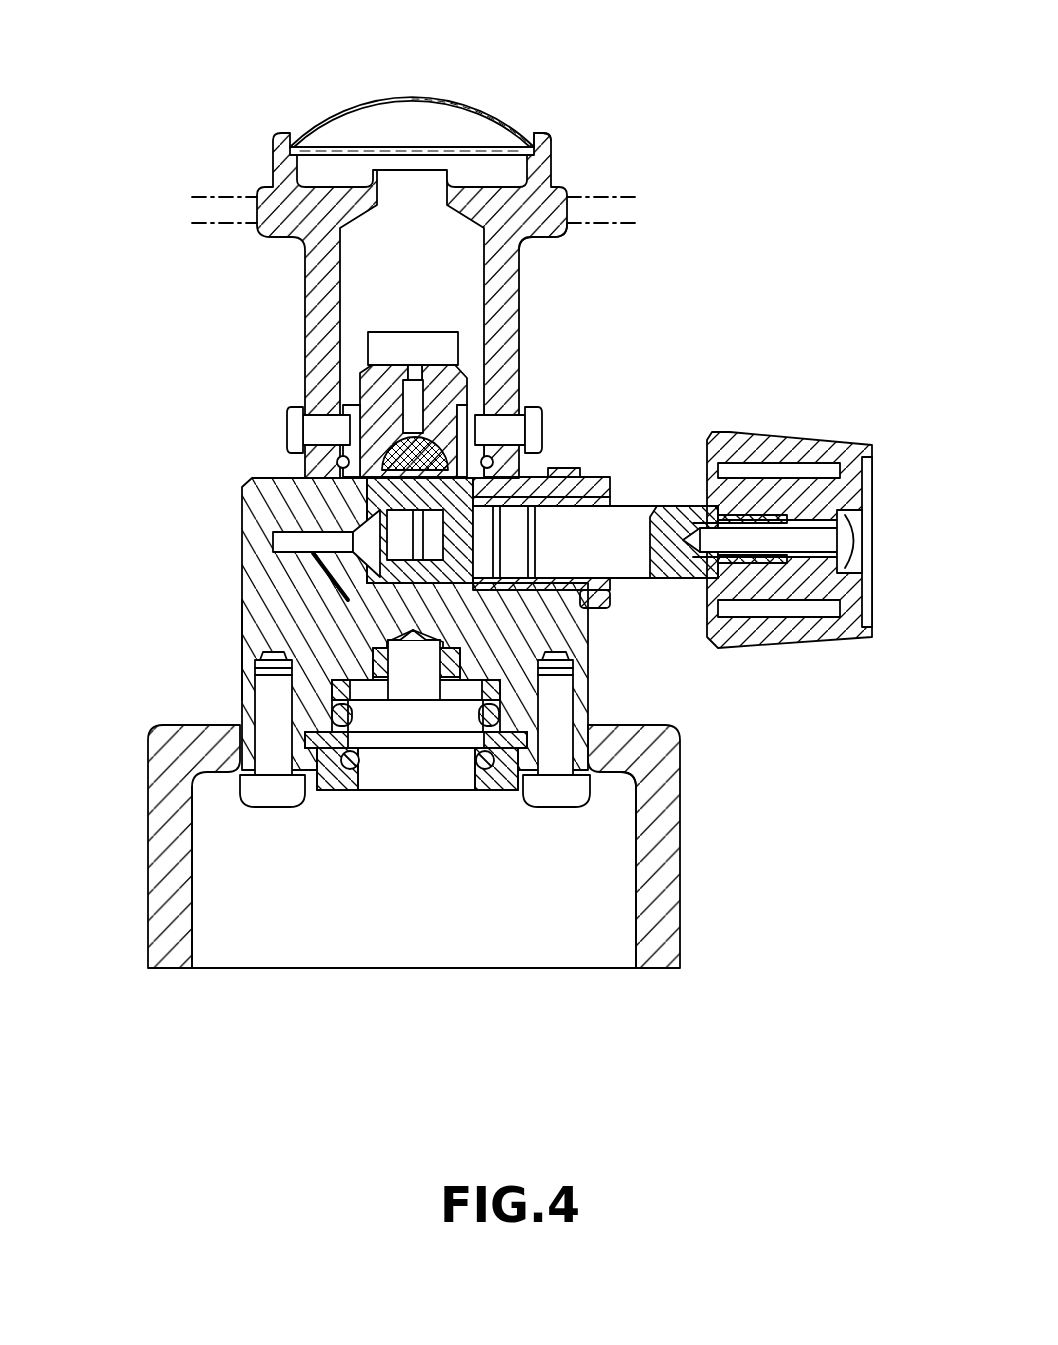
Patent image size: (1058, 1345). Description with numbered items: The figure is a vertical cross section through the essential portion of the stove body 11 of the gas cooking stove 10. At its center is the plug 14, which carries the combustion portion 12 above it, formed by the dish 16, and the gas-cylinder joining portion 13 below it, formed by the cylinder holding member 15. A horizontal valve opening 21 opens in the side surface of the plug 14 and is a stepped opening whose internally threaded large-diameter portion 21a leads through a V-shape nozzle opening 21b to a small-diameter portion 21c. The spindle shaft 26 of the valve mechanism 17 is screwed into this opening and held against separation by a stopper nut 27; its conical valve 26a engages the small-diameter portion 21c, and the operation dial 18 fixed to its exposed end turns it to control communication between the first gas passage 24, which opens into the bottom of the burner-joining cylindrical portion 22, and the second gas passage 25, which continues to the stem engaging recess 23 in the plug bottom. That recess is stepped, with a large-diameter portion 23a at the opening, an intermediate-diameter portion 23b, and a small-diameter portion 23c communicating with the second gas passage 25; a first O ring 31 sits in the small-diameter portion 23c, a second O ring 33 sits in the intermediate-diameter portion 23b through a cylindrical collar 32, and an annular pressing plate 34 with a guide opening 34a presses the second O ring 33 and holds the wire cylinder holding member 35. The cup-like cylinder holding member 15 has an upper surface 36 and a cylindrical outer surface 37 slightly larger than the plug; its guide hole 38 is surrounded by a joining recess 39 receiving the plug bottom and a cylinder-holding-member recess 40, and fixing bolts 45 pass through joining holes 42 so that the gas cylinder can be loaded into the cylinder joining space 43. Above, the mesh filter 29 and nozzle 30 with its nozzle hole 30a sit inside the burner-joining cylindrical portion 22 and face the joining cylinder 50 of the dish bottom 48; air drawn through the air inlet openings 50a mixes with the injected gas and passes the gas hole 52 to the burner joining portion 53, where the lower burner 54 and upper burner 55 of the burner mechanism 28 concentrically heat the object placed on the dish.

The gas cooking stove 10 is at (152, 76).
The stove body 11 is at (690, 690).
The combustion portion 12 is at (660, 318).
The gas-cylinder joining portion 13 is at (706, 843).
The plug 14 is at (250, 640).
The cylinder holding member 15 is at (165, 882).
The dish 16 is at (565, 197).
The valve mechanism 17 is at (340, 597).
The operation dial 18 is at (845, 483).
The valve opening 21 is at (480, 410).
The large-diameter portion 21a is at (542, 492).
The V-shape nozzle opening 21b is at (273, 515).
The small-diameter portion 21c is at (285, 542).
The burner-joining cylindrical portion 22 is at (472, 407).
The stem engaging recess 23 is at (672, 605).
The large-diameter portion 23a is at (505, 692).
The intermediate-diameter portion 23b is at (462, 665).
The small-diameter portion 23c is at (445, 640).
The first gas passage 24 is at (293, 500).
The second gas passage 25 is at (260, 635).
The spindle shaft 26 is at (625, 520).
The conical valve 26a is at (345, 575).
The stopper nut 27 is at (607, 478).
The burner mechanism 28 is at (272, 295).
The mesh filter 29 is at (320, 460).
The nozzle 30 is at (383, 400).
The nozzle hole 30a is at (405, 370).
The first O ring 31 is at (300, 648).
The cylindrical collar 32 is at (327, 690).
The second O ring 33 is at (332, 712).
The pressing plate 34 is at (323, 771).
The guide opening 34a is at (408, 771).
The cylinder holding member 35 is at (462, 770).
The upper surface 36 is at (660, 724).
The cylindrical outer surface 37 is at (680, 900).
The guide hole 38 is at (357, 770).
The joining recess 39 is at (668, 762).
The cylinder-holding-member recess 40 is at (513, 770).
The joining holes 42 is at (230, 773).
The cylinder joining space 43 is at (428, 948).
The fixing bolts 45 is at (270, 792).
The bottom 48 is at (535, 228).
The joining cylinder 50 is at (318, 275).
The air inlet openings 50a is at (430, 335).
The gas hole 52 is at (405, 190).
The burner joining portion 53 is at (532, 152).
The lower burner 54 is at (490, 142).
The upper burner 55 is at (447, 100).